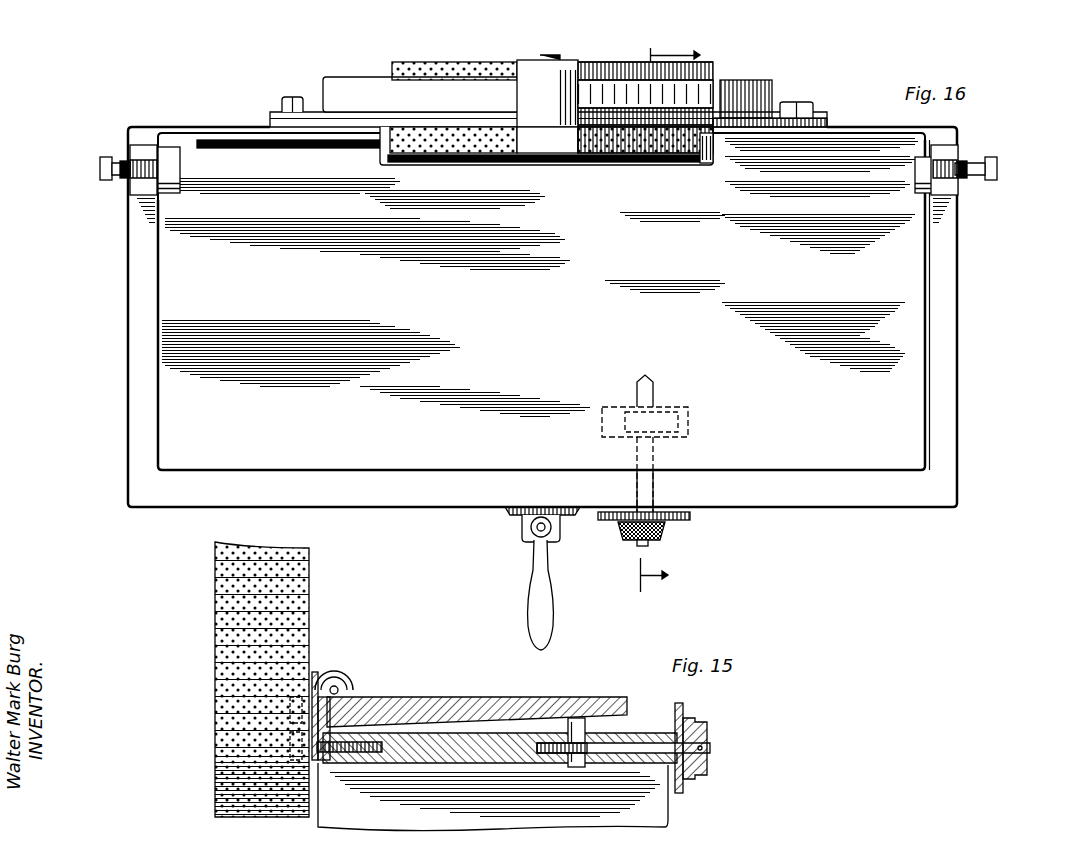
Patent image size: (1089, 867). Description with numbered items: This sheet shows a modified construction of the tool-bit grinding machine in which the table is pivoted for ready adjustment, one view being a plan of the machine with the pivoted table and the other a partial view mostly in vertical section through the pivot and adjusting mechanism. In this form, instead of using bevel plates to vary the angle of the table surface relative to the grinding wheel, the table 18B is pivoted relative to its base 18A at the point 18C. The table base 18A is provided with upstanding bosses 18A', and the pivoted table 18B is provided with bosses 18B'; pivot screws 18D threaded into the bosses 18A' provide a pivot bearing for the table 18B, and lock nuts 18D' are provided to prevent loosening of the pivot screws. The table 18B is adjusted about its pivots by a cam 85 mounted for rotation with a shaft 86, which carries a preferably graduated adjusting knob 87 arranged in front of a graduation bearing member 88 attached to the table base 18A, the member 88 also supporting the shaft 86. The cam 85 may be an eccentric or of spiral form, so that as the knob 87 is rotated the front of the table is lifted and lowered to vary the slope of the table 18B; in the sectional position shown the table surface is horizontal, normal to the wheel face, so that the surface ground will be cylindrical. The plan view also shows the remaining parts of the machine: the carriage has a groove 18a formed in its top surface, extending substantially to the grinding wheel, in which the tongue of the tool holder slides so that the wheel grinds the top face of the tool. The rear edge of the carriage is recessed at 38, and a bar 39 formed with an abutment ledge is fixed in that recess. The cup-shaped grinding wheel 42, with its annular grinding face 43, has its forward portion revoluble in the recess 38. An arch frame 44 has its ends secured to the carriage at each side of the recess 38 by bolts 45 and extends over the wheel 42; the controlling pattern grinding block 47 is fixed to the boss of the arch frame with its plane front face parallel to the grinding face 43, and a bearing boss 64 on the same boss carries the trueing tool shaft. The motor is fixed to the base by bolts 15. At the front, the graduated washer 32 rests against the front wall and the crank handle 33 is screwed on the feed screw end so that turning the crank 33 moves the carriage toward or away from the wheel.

In FIG. 16, the bolts 15 is at (687, 320).
In FIG. 16, the table base 18A is at (545, 317).
In FIG. 15, the table base 18A is at (497, 782).
In FIG. 16, the upstanding bosses 18A' is at (543, 157).
In FIG. 16, the pivoted table 18B is at (545, 301).
In FIG. 15, the pivoted table 18B is at (477, 693).
In FIG. 16, the bosses 18B' is at (194, 170).
In FIG. 15, the pivot point 18C is at (336, 698).
In FIG. 16, the pivot screws 18D is at (545, 172).
In FIG. 16, the lock nuts 18D' is at (541, 192).
In FIG. 16, the groove 18a is at (295, 148).
In FIG. 16, the graduated washer 32 is at (508, 510).
In FIG. 16, the crank handle 33 is at (533, 556).
In FIG. 16, the recess 38 is at (710, 170).
In FIG. 16, the bar 39 is at (600, 170).
In FIG. 16, the grinding wheel 42 is at (392, 68).
In FIG. 15, the grinding wheel 42 is at (215, 650).
In FIG. 16, the annular grinding face 43 is at (428, 166).
In FIG. 15, the annular grinding face 43 is at (310, 590).
In FIG. 16, the arch frame 44 is at (323, 80).
In FIG. 16, the bolts 45 is at (283, 104).
In FIG. 16, the controlling pattern grinding block 47 is at (535, 148).
In FIG. 16, the bearing boss 64 is at (520, 101).
In FIG. 16, the cam 85 is at (676, 410).
In FIG. 15, the cam 85 is at (576, 718).
In FIG. 16, the shaft 86 is at (656, 452).
In FIG. 15, the shaft 86 is at (632, 743).
In FIG. 16, the adjusting knob 87 is at (665, 536).
In FIG. 15, the adjusting knob 87 is at (707, 727).
In FIG. 16, the graduation bearing member 88 is at (690, 517).
In FIG. 15, the graduation bearing member 88 is at (683, 708).